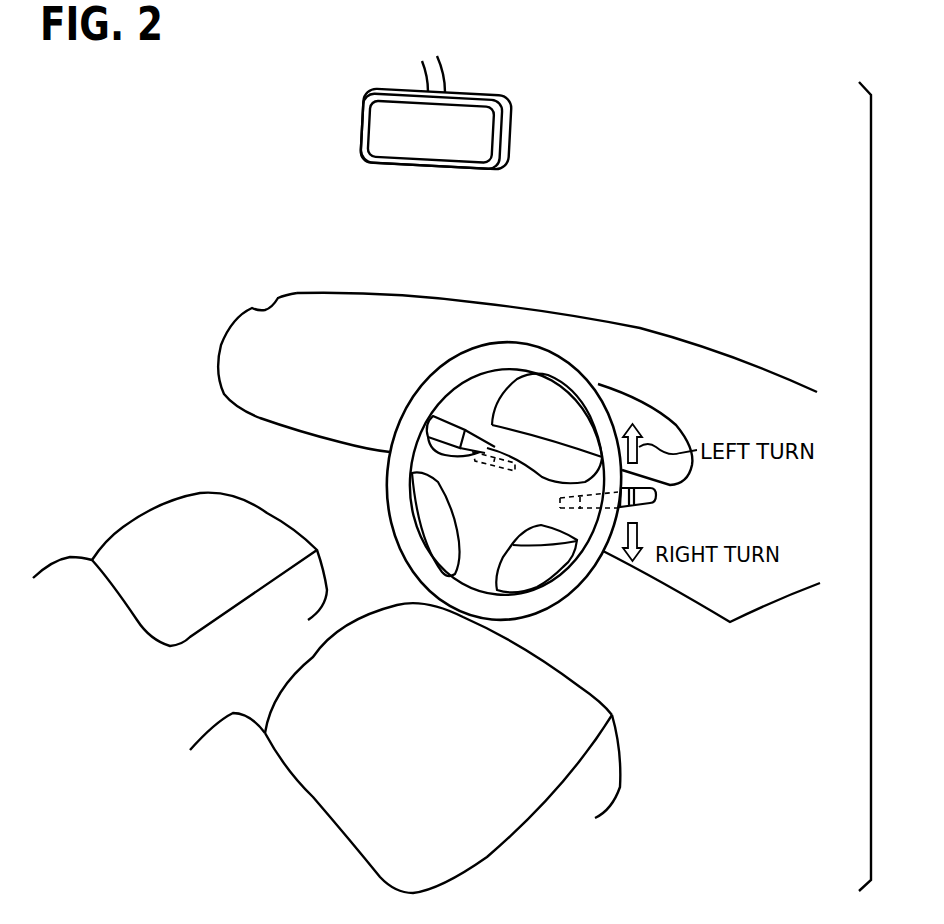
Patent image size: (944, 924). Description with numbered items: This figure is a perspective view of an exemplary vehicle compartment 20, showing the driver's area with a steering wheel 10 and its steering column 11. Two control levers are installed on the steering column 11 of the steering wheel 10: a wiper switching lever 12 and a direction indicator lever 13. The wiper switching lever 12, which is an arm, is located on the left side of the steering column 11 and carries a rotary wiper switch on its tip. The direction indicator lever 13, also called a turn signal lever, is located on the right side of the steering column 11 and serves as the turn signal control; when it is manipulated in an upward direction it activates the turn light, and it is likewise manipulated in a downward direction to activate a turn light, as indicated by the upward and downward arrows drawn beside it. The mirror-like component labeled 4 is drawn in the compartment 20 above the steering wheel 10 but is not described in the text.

The rear-view mirror display 4 is at (504, 108).
The steering wheel 10 is at (533, 456).
The steering column 11 is at (533, 547).
The wiper switching lever 12 is at (452, 414).
The direction indicator lever 13 is at (614, 510).
The vehicle compartment 20 is at (219, 432).